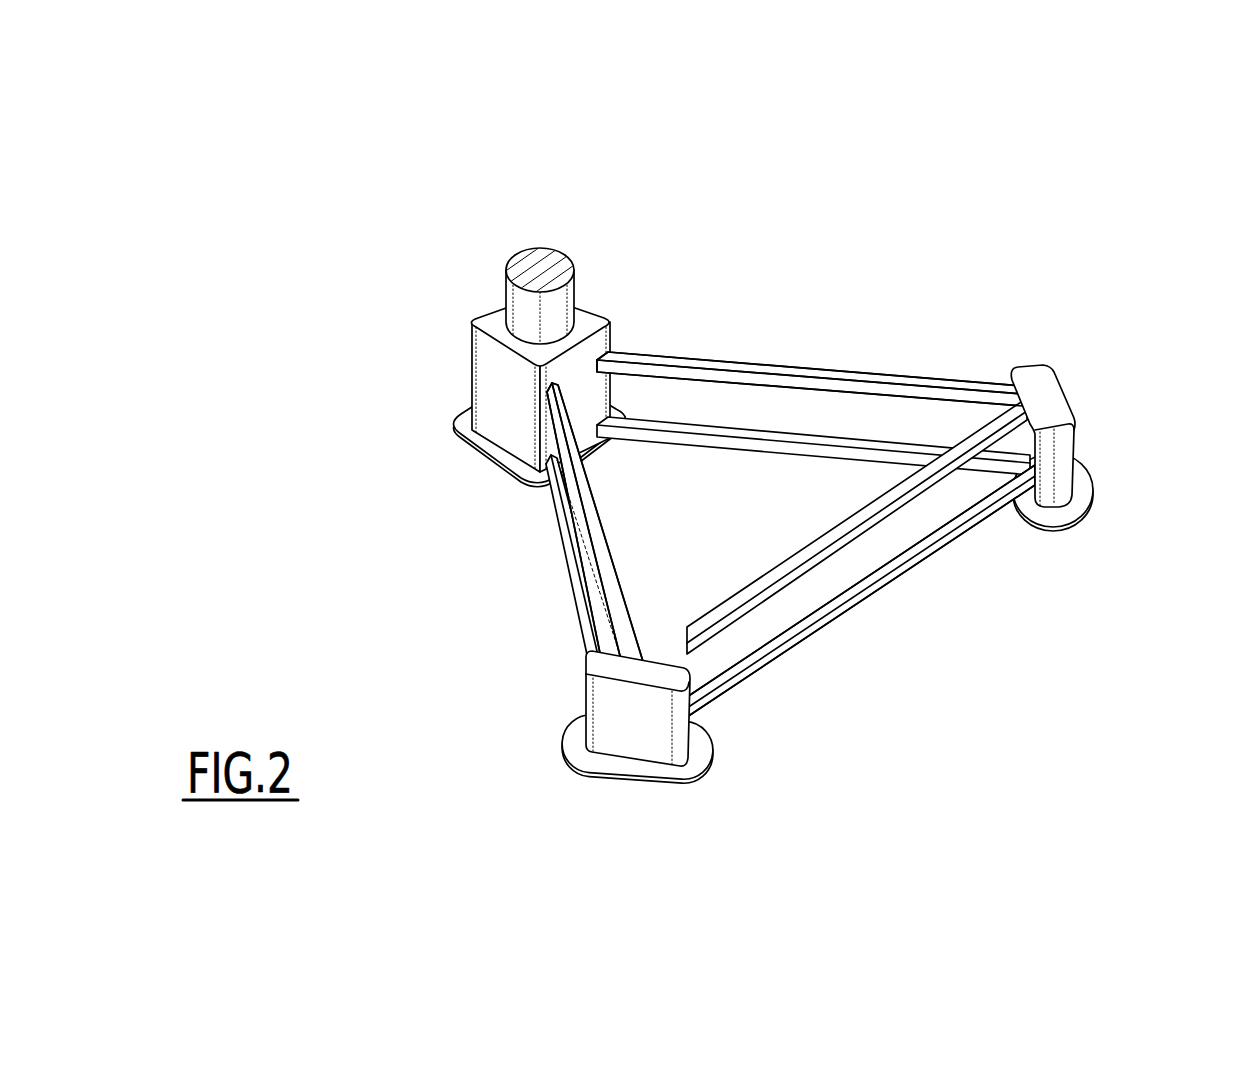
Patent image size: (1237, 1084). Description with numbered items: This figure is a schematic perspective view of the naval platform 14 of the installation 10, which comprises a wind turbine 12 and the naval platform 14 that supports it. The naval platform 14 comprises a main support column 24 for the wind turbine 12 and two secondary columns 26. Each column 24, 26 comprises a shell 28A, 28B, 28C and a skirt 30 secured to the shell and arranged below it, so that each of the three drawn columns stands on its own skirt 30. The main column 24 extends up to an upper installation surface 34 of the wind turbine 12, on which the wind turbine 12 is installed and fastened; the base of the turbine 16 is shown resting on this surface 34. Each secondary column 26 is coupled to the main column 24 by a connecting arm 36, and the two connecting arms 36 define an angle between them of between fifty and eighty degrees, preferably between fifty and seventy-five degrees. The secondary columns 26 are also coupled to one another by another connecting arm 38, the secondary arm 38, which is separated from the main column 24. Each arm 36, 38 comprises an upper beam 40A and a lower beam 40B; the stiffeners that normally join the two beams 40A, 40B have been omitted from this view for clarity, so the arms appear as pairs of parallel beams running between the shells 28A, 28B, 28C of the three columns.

The training device 10 is at (782, 501).
The wind turbine 12 is at (580, 282).
The naval platform 14 is at (782, 479).
The post top surface 16 is at (561, 252).
The main support column 24 is at (514, 325).
The secondary column 26 is at (840, 617).
The shell 28A is at (469, 370).
The shell 28B is at (584, 708).
The shell 28C is at (1076, 477).
The skirt 30 is at (462, 470).
The upper installation surface 34 is at (590, 322).
The connecting arm 36 is at (801, 345).
The secondary arm 38 is at (875, 618).
The upper beam 40A is at (895, 383).
The lower beam 40B is at (556, 518).